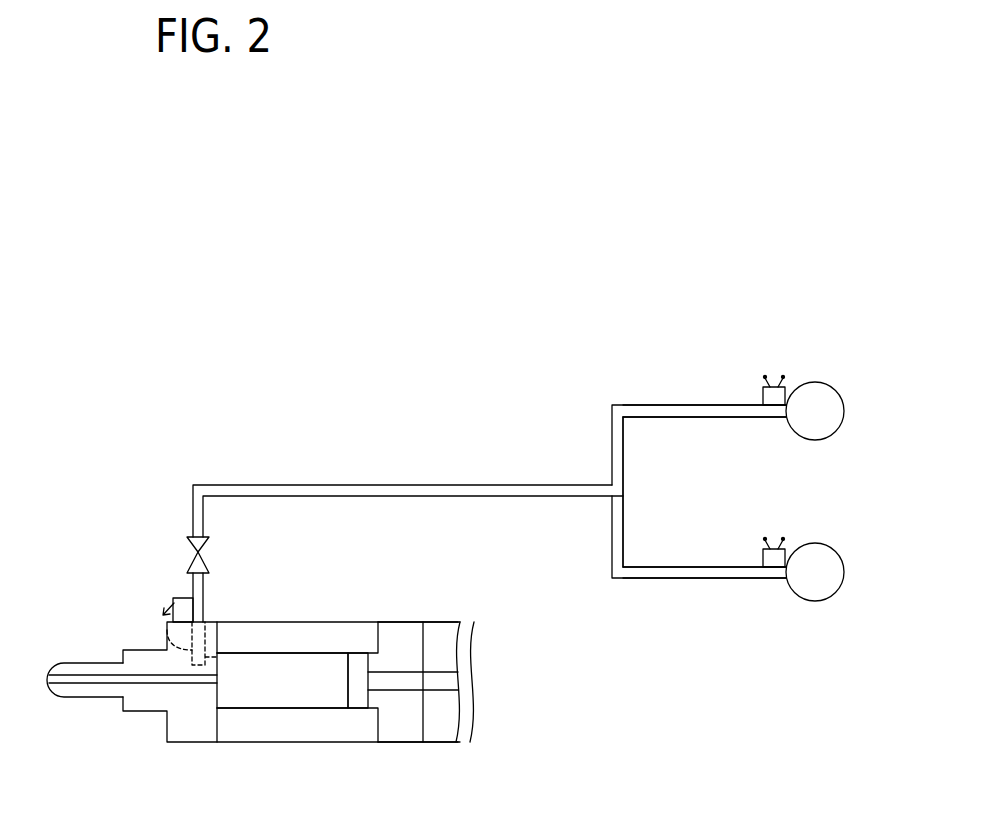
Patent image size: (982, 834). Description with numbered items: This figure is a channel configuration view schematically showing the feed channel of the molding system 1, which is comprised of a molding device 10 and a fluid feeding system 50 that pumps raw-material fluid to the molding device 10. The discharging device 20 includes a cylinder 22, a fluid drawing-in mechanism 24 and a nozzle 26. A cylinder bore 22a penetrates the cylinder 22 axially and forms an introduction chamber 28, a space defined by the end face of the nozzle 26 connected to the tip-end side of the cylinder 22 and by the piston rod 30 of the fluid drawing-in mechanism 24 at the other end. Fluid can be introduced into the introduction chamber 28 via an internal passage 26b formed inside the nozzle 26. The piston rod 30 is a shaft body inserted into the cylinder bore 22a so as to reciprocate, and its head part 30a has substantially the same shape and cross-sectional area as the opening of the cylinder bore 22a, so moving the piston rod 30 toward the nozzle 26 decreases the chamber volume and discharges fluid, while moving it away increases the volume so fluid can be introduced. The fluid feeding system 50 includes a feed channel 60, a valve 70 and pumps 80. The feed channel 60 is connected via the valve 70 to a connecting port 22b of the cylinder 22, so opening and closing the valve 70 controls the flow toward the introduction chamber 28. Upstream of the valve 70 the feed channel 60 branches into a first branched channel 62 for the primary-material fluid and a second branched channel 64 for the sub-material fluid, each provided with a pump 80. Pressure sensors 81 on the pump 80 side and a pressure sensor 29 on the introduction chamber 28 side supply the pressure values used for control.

The molding system 1 is at (625, 350).
The molding device 10 is at (248, 674).
The discharging device 20 is at (107, 645).
The cylinder 22 is at (293, 728).
The cylinder bore 22a is at (286, 642).
The connecting port 22b is at (205, 610).
The fluid drawing-in mechanism 24 is at (410, 622).
The nozzle 26 is at (102, 698).
The internal passage 26b is at (167, 637).
The introduction chamber 28 is at (315, 662).
The pressure sensor 29 is at (183, 598).
The piston rod 30 is at (403, 683).
The head part 30a is at (360, 698).
The fluid feeding system 50 is at (578, 455).
The feed channel 60 is at (527, 497).
The first branched channel 62 is at (700, 418).
The second branched channel 64 is at (704, 579).
The valve 70 is at (208, 551).
The pump 80 is at (805, 440).
The pressure sensor 81 is at (762, 392).